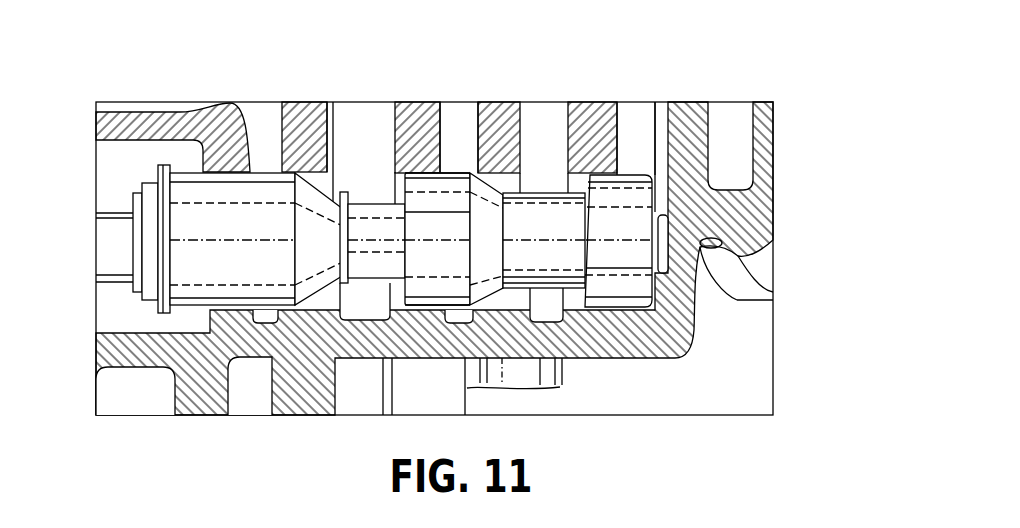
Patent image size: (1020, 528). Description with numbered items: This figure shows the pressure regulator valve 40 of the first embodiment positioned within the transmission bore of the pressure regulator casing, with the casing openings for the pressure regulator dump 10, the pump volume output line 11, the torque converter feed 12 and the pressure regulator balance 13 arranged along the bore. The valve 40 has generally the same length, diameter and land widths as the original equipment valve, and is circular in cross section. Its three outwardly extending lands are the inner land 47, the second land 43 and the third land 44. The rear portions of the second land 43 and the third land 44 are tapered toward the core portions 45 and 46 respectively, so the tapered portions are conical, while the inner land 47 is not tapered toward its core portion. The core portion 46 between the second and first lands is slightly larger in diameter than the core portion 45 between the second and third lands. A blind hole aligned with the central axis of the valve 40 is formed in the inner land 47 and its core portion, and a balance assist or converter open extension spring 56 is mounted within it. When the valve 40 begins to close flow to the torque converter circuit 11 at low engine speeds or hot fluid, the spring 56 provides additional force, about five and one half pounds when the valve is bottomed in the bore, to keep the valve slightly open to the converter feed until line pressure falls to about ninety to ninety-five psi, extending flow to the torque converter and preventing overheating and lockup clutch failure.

The pressure regulator dump 10 is at (255, 122).
The pump volume output line 11 is at (358, 122).
The torque converter feed 12 is at (456, 122).
The pressure regulator balance 13 is at (630, 122).
The pressure regulator valve 40 is at (449, 205).
The second land 43 is at (443, 285).
The third land 44 is at (280, 193).
The core portion 45 is at (548, 278).
The core portion 46 is at (372, 265).
The inner land 47 is at (623, 263).
The converter open extension spring 56 is at (664, 238).